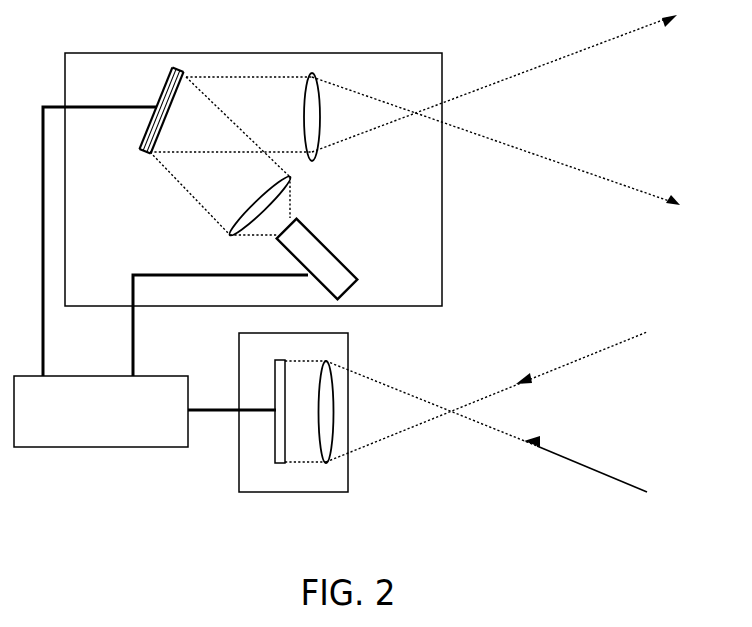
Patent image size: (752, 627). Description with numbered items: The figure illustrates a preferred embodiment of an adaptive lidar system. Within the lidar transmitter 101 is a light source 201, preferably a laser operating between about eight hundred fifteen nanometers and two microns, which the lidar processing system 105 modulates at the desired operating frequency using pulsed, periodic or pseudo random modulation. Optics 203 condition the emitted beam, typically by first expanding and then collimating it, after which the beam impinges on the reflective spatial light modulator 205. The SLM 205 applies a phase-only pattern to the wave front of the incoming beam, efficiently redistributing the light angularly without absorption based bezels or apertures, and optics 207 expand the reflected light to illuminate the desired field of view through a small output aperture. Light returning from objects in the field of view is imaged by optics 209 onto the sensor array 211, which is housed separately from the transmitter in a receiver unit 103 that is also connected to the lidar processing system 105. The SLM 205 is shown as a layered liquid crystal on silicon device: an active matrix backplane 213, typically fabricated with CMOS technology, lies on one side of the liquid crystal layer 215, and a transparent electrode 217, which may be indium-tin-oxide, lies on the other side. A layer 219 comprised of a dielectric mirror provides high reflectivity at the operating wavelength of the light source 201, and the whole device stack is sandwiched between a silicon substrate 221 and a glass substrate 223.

The lidar transmitter 101 is at (65, 80).
The receiver module housing 103 is at (253, 493).
The lidar processing system 105 is at (58, 448).
The light source 201 is at (333, 250).
The optics 203 is at (284, 190).
The spatial light modulator 205 is at (169, 112).
The optics 207 is at (312, 72).
The optics 209 is at (345, 450).
The sensor array 211 is at (275, 447).
The active matrix backplane 213 is at (146, 152).
The liquid crystal layer 215 is at (186, 73).
The transparent electrode 217 is at (150, 156).
The layer 219 is at (179, 70).
The silicon substrate 221 is at (145, 148).
The glass substrate 223 is at (155, 155).